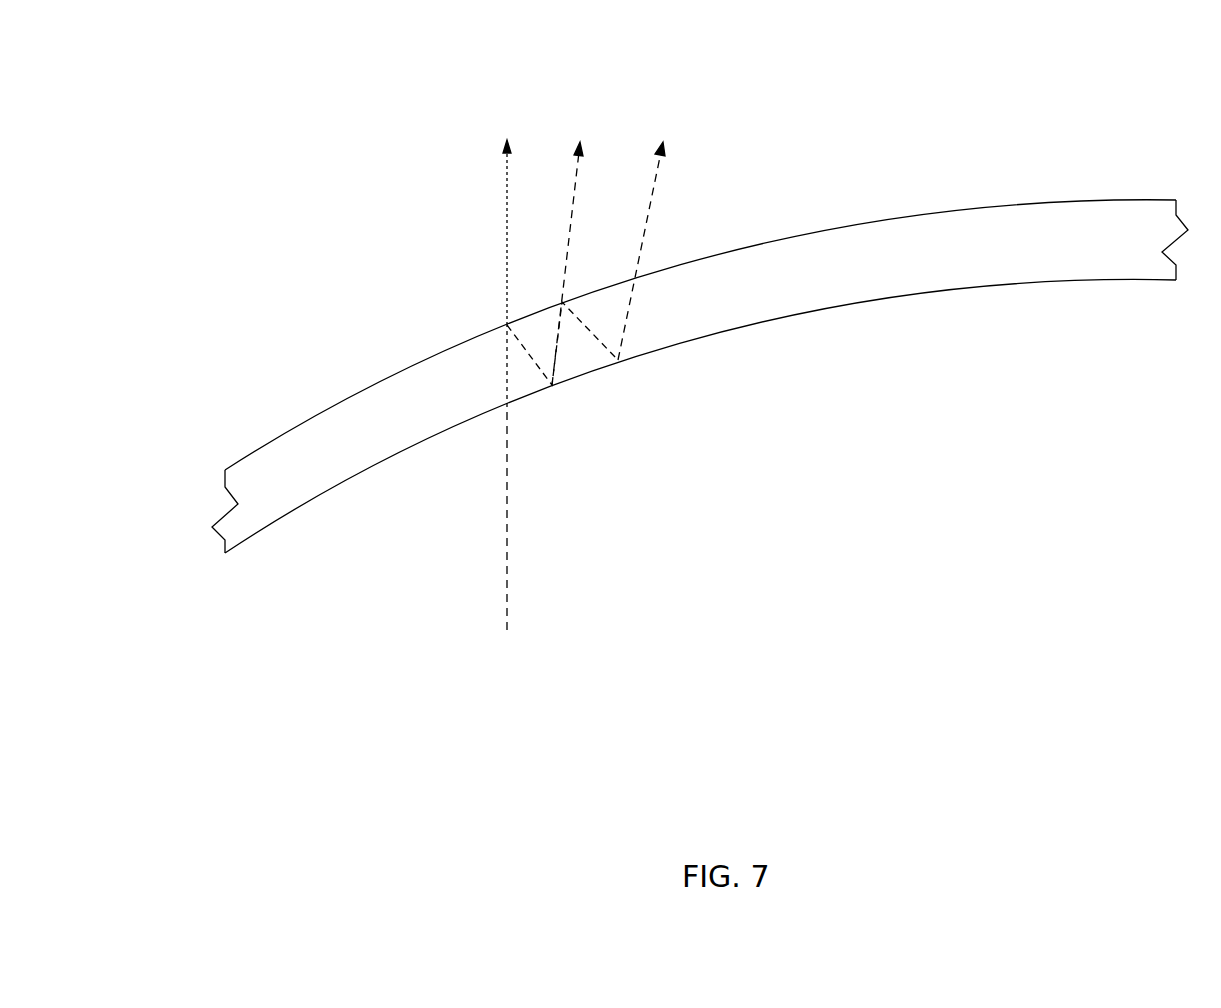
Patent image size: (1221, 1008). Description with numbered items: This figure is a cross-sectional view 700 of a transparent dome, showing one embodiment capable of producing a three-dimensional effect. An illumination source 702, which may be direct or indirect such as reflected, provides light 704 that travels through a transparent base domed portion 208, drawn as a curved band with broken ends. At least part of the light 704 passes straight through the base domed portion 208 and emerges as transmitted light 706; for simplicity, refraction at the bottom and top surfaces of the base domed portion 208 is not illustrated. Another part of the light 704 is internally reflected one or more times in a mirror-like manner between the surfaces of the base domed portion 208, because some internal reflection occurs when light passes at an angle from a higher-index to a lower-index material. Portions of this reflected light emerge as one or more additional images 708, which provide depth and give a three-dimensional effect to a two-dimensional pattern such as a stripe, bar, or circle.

The base domed portion 208 is at (277, 438).
The ray diagram 700 is at (1086, 103).
The illumination source 702 is at (557, 632).
The light 704 is at (507, 582).
The transmitted light 706 is at (507, 235).
The additional images 708 is at (578, 167).